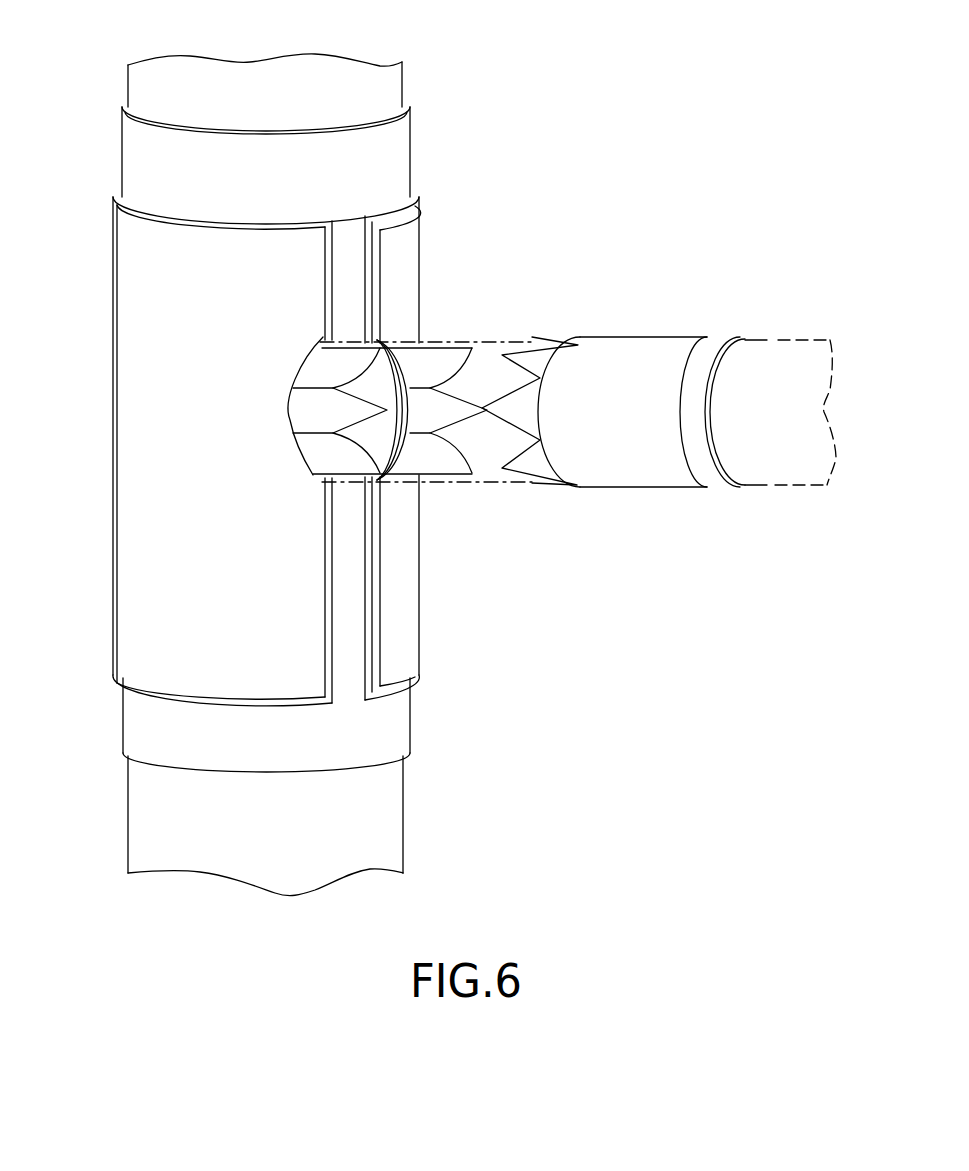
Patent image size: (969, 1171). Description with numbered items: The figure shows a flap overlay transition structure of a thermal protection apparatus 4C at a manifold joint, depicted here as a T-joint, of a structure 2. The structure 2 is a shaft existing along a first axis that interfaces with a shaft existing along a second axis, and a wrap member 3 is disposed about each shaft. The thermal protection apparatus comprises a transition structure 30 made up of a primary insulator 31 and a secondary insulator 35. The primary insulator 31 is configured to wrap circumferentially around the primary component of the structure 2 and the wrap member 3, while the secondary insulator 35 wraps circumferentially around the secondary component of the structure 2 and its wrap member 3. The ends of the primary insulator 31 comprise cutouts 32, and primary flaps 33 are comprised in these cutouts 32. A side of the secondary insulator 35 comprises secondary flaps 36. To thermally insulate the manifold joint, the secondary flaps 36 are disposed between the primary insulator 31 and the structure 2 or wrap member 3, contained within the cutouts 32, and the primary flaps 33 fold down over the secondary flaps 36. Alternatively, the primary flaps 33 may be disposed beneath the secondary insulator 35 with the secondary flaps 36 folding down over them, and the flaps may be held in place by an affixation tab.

The structure 2 is at (388, 84).
The wrap member 3 is at (398, 147).
The thermal protection apparatus 4C is at (412, 641).
The transition structure 30 is at (598, 200).
The primary insulator 31 is at (133, 257).
The cutouts 32 is at (377, 350).
The primary flaps 33 is at (343, 462).
The secondary insulator 35 is at (680, 347).
The secondary flaps 36 is at (503, 405).